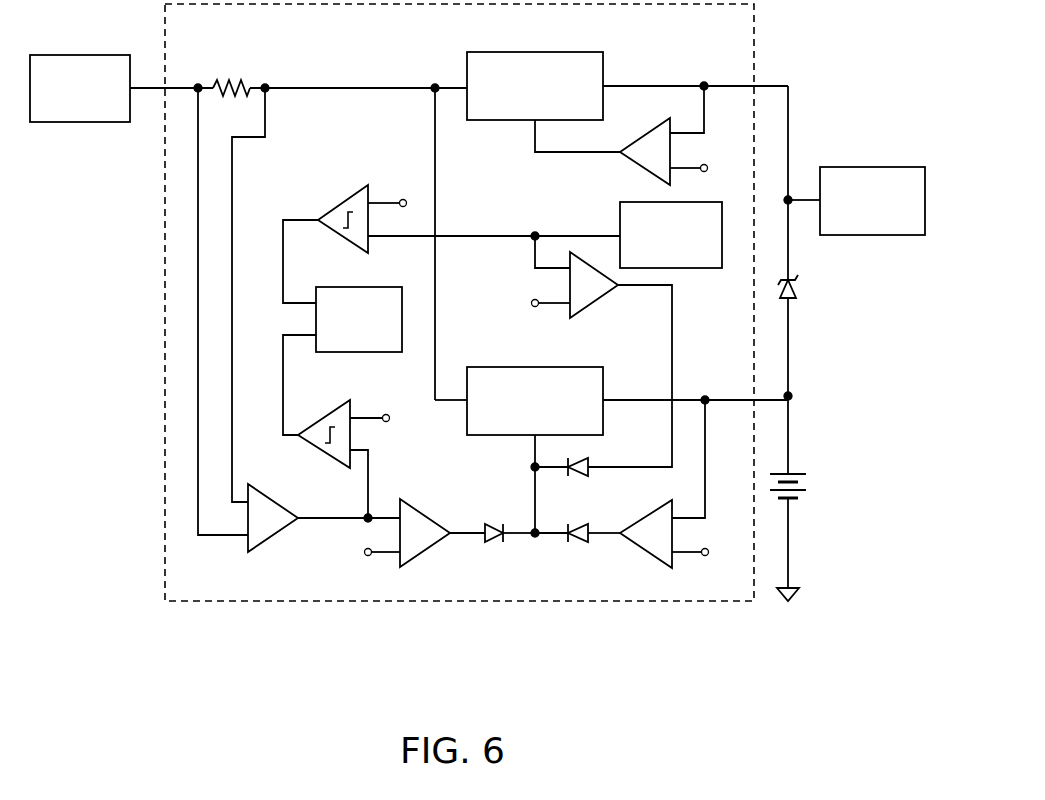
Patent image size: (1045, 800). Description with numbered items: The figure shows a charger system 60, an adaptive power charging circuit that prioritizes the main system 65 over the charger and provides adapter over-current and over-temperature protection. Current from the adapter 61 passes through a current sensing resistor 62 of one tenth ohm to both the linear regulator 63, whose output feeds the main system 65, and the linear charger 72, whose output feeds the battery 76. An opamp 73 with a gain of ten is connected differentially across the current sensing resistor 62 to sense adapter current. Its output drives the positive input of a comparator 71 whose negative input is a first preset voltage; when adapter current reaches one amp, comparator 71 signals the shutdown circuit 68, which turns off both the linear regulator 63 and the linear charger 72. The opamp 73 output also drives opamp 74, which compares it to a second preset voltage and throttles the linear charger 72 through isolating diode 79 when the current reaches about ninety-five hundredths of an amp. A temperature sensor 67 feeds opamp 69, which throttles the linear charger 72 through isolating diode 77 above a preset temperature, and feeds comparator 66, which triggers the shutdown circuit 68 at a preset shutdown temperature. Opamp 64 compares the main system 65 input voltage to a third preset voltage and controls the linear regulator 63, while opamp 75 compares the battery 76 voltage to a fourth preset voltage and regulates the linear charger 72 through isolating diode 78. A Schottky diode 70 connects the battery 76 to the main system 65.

The charger system 60 is at (211, 587).
The adapter 61 is at (86, 55).
The current sensing resistor 62 is at (233, 82).
The linear regulator 63 is at (570, 52).
The opamp 64 is at (638, 135).
The main system 65 is at (878, 167).
The comparator 66 is at (338, 198).
The temperature sensor 67 is at (652, 202).
The shutdown circuit 68 is at (362, 287).
The opamp 69 is at (582, 312).
The Schottky diode 70 is at (800, 292).
The comparator 71 is at (332, 408).
The linear charger 72 is at (542, 367).
The opamp 73 is at (266, 502).
The opamp 74 is at (418, 510).
The opamp 75 is at (652, 508).
The battery 76 is at (806, 488).
The isolating diode 77 is at (588, 460).
The isolating diode 78 is at (590, 545).
The isolating diode 79 is at (492, 550).